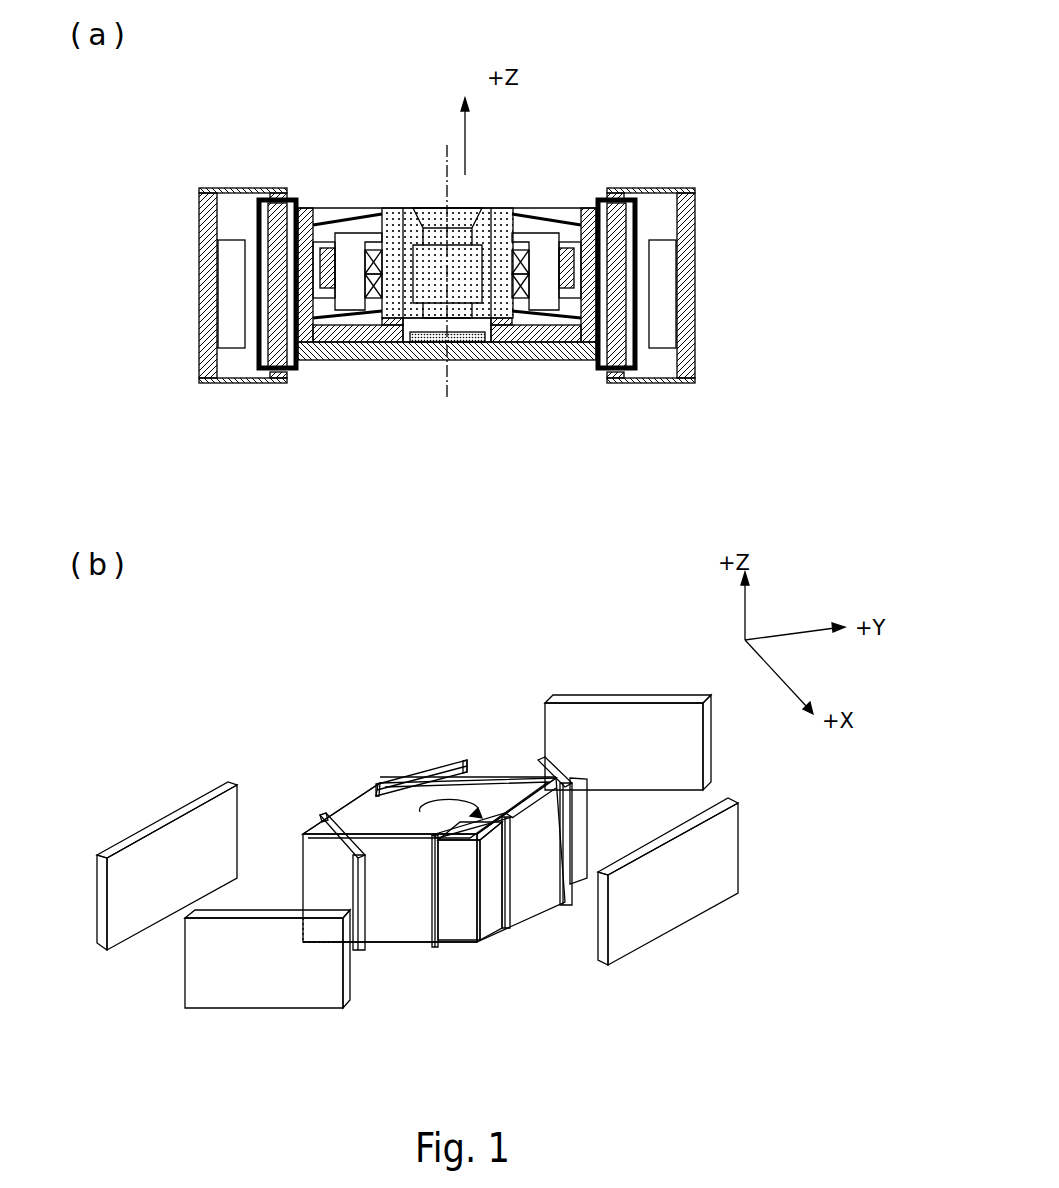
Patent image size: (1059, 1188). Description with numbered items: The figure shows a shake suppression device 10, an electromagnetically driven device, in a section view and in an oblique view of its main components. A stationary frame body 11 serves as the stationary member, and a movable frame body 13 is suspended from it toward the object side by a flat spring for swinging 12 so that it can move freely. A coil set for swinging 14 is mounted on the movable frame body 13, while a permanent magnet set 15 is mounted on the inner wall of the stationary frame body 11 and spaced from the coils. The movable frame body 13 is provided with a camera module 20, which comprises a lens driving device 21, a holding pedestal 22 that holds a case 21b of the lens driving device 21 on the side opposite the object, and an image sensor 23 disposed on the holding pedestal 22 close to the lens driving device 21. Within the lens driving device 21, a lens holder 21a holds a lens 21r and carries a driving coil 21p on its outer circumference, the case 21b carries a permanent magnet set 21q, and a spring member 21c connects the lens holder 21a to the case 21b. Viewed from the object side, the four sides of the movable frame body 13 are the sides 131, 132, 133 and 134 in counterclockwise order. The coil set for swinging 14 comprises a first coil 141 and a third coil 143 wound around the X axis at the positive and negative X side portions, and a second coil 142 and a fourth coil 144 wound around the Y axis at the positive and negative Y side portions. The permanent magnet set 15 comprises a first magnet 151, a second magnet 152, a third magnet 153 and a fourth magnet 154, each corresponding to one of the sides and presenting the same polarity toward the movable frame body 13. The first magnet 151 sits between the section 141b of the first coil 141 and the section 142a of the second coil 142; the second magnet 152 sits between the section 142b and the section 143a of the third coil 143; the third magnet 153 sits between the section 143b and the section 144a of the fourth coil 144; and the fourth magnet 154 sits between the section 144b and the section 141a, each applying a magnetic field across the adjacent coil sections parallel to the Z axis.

The shake suppression device 10 is at (430, 193).
The stationary frame body 11 is at (695, 266).
The flat spring for swinging 12 is at (655, 187).
The movable frame body 13 is at (615, 220).
The coil set for swinging 14 is at (257, 225).
The permanent magnet set 15 is at (232, 312).
The camera module 20 is at (487, 440).
The lens driving device 21 is at (375, 362).
The lens holder 21a is at (515, 363).
The case 21b is at (582, 363).
The spring member 21c is at (555, 363).
The driving coil 21p is at (352, 362).
The permanent magnet set 21q is at (313, 363).
The lens 21r is at (470, 210).
The holding pedestal 22 is at (467, 362).
The image sensor 23 is at (413, 362).
The side 131 is at (535, 878).
The side 132 is at (503, 777).
The side 133 is at (357, 802).
The side 134 is at (393, 915).
The first coil 141 is at (443, 893).
The section of the first coil 141a is at (438, 920).
The section of the first coil 141b is at (510, 922).
The second coil 142 is at (570, 825).
The section of the second coil 142a is at (558, 888).
The section of the second coil 142b is at (542, 768).
The third coil 143 is at (407, 777).
The section of the third coil 143a is at (467, 767).
The section of the third coil 143b is at (372, 790).
The fourth coil 144 is at (357, 878).
The section of the fourth coil 144a is at (322, 818).
The section of the fourth coil 144b is at (362, 947).
The first magnet 151 is at (722, 852).
The second magnet 152 is at (587, 700).
The third magnet 153 is at (195, 803).
The fourth magnet 154 is at (217, 998).